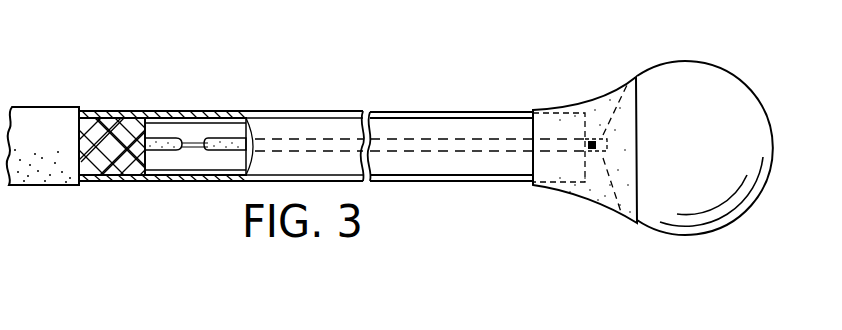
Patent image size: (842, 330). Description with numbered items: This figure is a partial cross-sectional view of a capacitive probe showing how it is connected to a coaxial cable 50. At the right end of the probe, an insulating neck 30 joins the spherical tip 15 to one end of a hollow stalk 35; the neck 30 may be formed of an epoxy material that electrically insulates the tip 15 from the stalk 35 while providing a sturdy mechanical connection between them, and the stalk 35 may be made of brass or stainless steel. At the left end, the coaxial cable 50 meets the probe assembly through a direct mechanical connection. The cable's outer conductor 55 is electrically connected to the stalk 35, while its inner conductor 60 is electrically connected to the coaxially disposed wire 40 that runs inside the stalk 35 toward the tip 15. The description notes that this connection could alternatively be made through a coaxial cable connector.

The spherical tip 15 is at (698, 158).
The insulating neck 30 is at (610, 93).
The hollow stalk 35 is at (245, 110).
The coaxially disposed wire 40 is at (212, 138).
The coaxial cable 50 is at (48, 115).
The outer conductor 55 is at (107, 130).
The inner conductor 60 is at (190, 138).